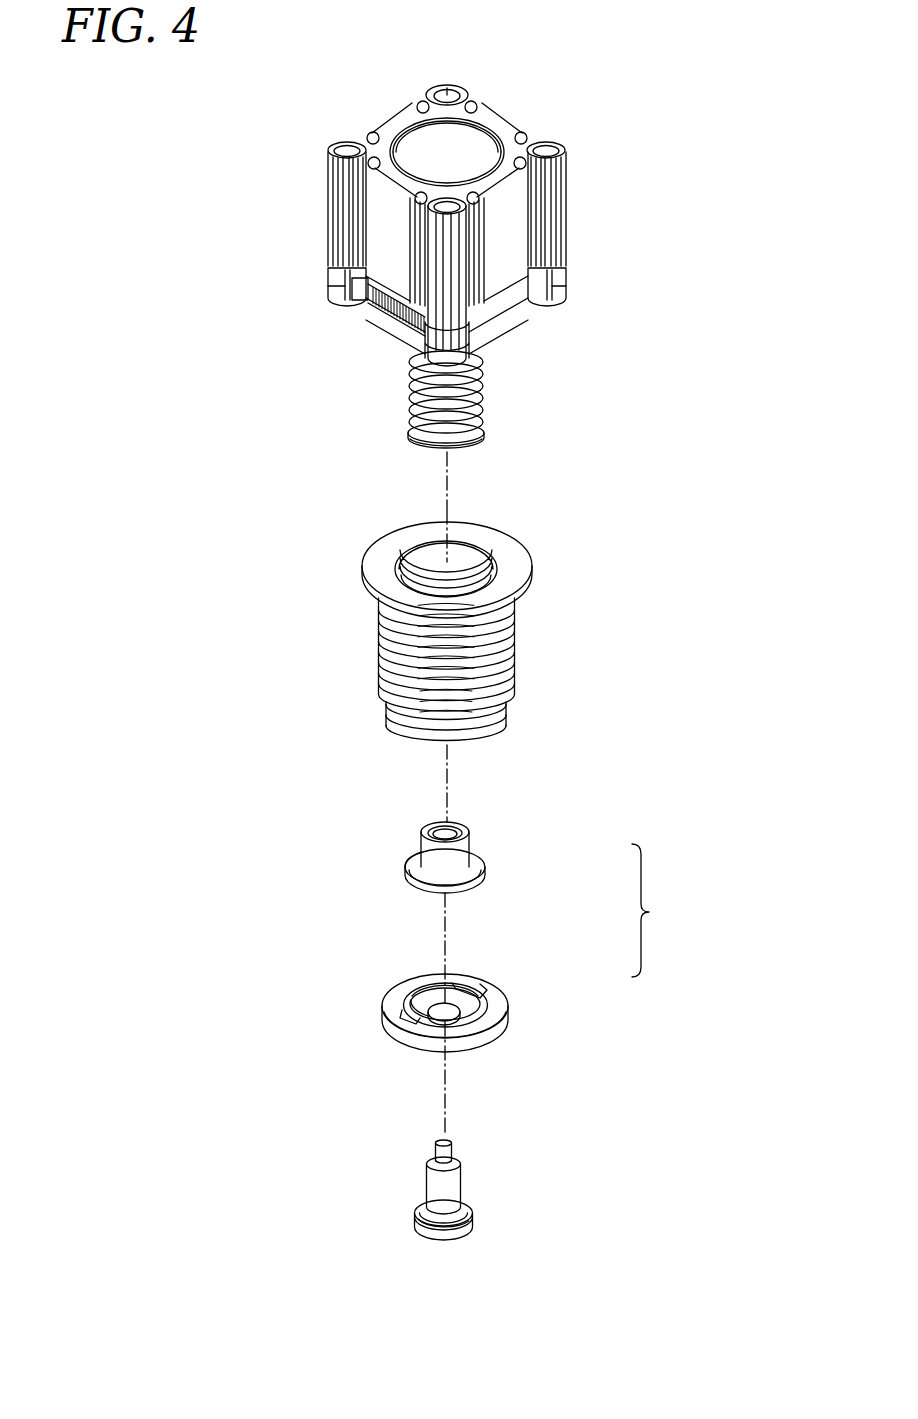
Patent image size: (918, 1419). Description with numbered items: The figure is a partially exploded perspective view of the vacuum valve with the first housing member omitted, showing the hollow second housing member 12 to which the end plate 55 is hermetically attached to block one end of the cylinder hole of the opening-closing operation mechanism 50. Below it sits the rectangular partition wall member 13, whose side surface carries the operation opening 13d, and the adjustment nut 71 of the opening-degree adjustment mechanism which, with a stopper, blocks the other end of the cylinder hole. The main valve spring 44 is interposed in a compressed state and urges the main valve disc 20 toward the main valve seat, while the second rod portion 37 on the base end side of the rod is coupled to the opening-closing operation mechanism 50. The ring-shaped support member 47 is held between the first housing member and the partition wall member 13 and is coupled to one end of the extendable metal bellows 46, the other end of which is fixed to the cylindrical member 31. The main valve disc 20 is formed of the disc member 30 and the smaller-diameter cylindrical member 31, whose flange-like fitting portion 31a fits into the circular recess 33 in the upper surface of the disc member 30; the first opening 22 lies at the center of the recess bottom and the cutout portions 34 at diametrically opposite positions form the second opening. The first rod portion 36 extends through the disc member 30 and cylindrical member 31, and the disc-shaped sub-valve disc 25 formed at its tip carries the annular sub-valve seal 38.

The second housing member 12 is at (397, 120).
The end plate 55 is at (473, 150).
The opening-closing operation mechanism 50 is at (577, 104).
The partition wall member 13 is at (335, 283).
The operation opening 13d is at (368, 307).
The adjustment nut 71 is at (393, 308).
The main valve spring 44 is at (415, 395).
The second rod portion 37 is at (483, 407).
The support member 47 is at (502, 568).
The bellows 46 is at (492, 658).
The main valve disc 20 is at (657, 910).
The cylindrical member 31 is at (460, 848).
The fitting portion 31a is at (410, 861).
The disc member 30 is at (507, 1010).
The recess 33 is at (428, 1000).
The cutout portions 34 is at (473, 990).
The first opening 22 is at (442, 1013).
The first rod portion 36 is at (448, 1183).
The sub-valve seal 38 is at (418, 1212).
The sub-valve disc 25 is at (448, 1238).